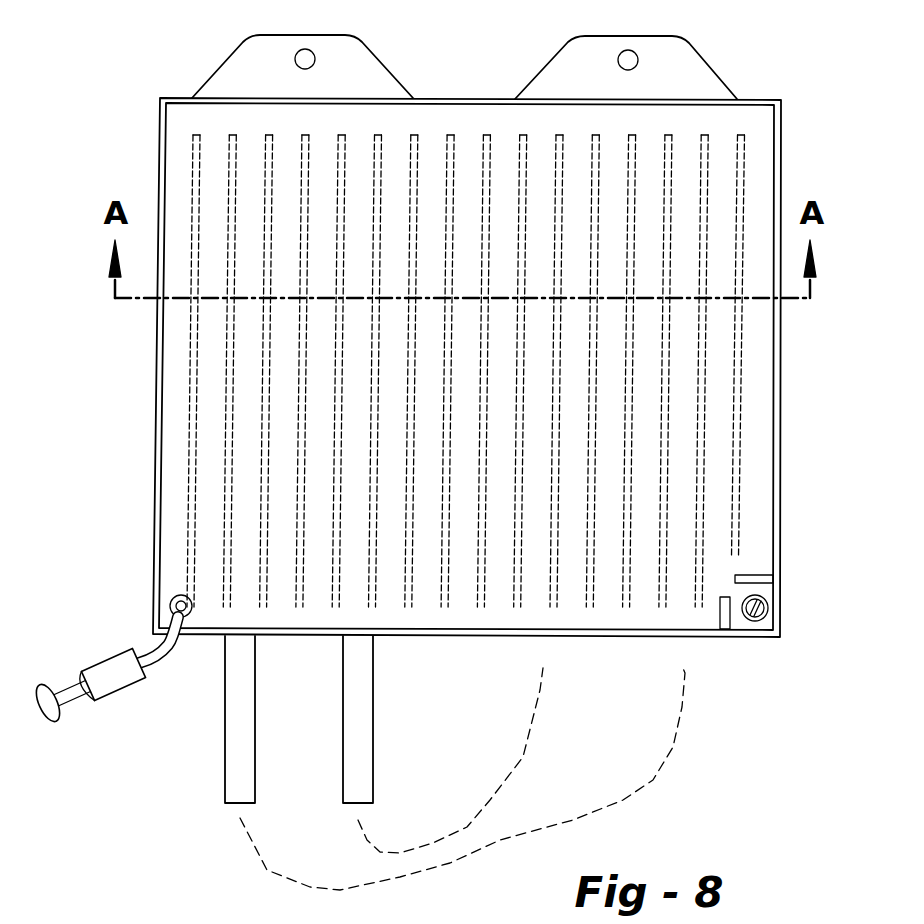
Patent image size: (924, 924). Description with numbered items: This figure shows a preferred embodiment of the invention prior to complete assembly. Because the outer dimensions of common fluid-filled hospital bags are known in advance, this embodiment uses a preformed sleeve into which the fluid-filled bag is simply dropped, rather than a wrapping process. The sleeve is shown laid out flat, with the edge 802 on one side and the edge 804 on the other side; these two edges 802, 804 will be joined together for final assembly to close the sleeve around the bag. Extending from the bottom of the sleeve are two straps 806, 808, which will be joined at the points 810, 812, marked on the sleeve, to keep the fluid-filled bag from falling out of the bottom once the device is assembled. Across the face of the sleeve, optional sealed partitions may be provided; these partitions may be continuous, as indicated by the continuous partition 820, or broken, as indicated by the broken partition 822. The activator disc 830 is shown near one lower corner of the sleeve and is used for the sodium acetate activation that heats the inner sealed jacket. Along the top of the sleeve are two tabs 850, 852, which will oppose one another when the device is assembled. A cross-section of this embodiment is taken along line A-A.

The edge 802 is at (153, 408).
The edge 804 is at (781, 392).
The strap 806 is at (235, 738).
The strap 808 is at (363, 762).
The point 810 is at (535, 657).
The point 812 is at (693, 652).
The continuous sealed partition 820 is at (230, 577).
The broken sealed partition 822 is at (190, 533).
The activator disc 830 is at (769, 612).
The tab 850 is at (363, 78).
The tab 852 is at (680, 78).